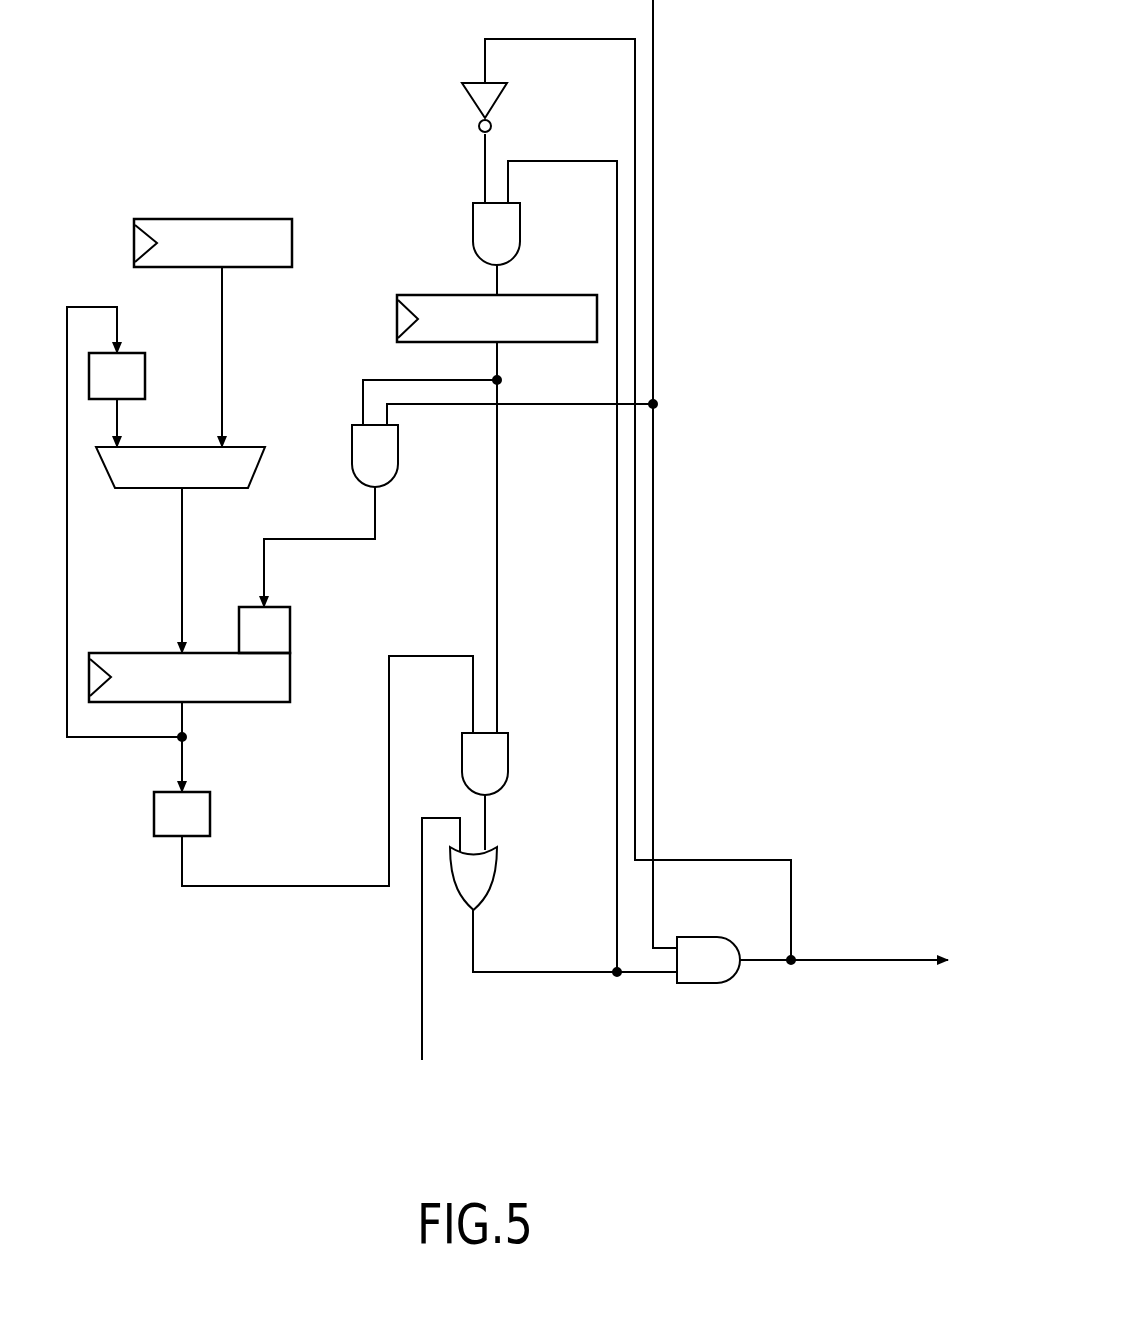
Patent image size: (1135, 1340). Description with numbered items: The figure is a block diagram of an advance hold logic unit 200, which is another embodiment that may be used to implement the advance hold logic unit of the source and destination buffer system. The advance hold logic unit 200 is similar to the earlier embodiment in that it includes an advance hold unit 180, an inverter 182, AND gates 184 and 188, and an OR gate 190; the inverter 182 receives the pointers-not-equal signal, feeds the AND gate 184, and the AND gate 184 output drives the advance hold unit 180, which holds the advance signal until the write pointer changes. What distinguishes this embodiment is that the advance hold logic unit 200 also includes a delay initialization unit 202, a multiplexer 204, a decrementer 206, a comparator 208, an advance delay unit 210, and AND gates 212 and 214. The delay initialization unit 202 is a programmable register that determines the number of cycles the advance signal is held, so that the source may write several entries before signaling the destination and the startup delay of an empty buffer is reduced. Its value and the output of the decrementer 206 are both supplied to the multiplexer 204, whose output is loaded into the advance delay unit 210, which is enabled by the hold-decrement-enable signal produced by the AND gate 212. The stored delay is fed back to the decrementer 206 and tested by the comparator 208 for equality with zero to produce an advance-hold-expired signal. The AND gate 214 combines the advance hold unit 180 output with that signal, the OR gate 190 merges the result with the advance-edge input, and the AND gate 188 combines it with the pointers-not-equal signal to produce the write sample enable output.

The advance hold logic unit 200 is at (492, 1141).
The inverter 182 is at (470, 100).
The AND gate 184 is at (473, 218).
The advance hold unit 180 is at (440, 295).
The delay initialization unit 202 is at (195, 219).
The decrementer 206 is at (145, 376).
The multiplexer 204 is at (255, 472).
The advance delay unit 210 is at (118, 653).
The comparator 208 is at (210, 813).
The AND gate 212 is at (398, 440).
The AND gate 214 is at (508, 762).
The OR gate 190 is at (497, 877).
The AND gate 188 is at (695, 985).